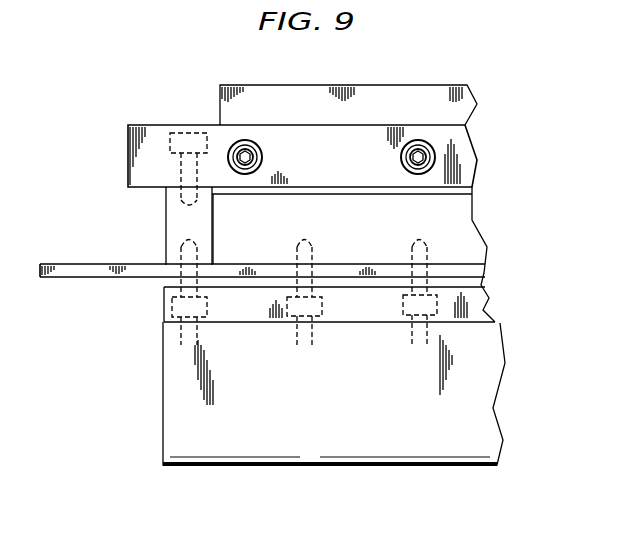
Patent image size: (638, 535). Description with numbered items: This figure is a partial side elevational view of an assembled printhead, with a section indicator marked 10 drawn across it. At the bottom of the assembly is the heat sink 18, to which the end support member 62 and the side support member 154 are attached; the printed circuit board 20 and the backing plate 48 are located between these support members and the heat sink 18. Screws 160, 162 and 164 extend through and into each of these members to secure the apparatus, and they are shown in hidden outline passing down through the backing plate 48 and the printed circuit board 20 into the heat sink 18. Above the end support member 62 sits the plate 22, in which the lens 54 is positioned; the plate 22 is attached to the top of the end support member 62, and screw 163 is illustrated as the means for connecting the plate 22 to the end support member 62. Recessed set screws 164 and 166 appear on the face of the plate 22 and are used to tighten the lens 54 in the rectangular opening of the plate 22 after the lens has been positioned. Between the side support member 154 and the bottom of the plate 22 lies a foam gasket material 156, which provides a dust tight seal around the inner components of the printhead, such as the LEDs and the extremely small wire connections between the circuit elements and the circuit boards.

The section line 10- 10 is at (418, 54).
The heat sink 18 is at (172, 418).
The printed circuit board 20 is at (90, 272).
The plate 22 is at (135, 163).
The backing plate 48 is at (467, 280).
The lens 54 is at (261, 104).
The end support member 62 is at (184, 226).
The side support member 154 is at (460, 226).
The foam gasket material 156 is at (337, 195).
The screw 160 is at (182, 330).
The screw 162 is at (296, 330).
The screw 163 is at (187, 125).
The screw 164 is at (252, 162).
The recessed set screw 166 is at (408, 160).